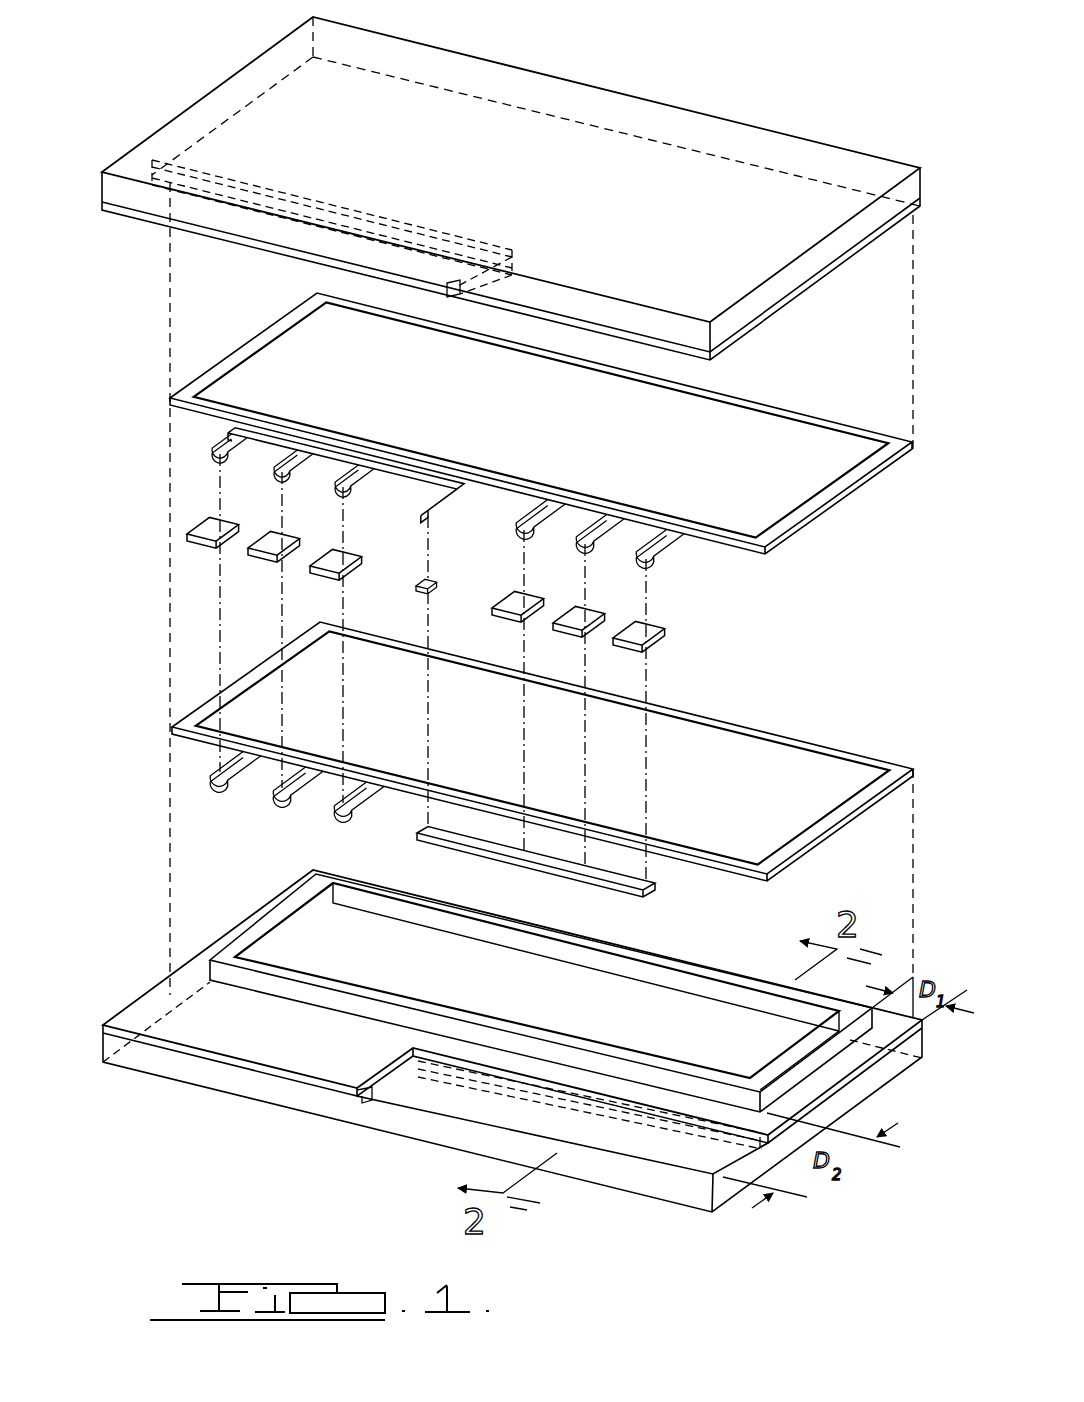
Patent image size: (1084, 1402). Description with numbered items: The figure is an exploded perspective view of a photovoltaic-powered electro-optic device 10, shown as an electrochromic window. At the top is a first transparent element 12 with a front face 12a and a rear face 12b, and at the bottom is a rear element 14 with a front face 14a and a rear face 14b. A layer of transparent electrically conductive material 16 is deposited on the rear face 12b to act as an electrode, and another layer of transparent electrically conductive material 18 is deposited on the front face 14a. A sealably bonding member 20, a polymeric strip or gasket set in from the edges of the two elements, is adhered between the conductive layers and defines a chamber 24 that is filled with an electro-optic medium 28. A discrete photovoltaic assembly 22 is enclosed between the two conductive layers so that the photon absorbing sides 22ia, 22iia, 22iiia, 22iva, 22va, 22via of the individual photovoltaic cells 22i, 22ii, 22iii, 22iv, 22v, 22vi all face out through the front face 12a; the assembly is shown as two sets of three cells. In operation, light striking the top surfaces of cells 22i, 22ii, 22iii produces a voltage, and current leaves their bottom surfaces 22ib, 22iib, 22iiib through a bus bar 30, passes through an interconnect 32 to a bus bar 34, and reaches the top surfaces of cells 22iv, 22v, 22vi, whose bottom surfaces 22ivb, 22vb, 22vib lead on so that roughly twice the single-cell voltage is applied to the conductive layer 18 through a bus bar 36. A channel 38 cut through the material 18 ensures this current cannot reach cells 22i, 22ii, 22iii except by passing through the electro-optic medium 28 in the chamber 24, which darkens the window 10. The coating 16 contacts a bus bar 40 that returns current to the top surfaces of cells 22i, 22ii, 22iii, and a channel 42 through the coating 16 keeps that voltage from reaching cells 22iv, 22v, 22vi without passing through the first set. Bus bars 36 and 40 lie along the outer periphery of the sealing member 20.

The photovoltaic-powered electro-optic device 10 is at (779, 70).
The first transparent element 12 is at (494, 188).
The front face 12a is at (215, 105).
The rear face 12b is at (135, 212).
The rear element 14 is at (494, 1041).
The front face 14a is at (115, 1028).
The rear face 14b is at (137, 1068).
The transparent electrically conductive material 16 is at (248, 247).
The transparent electrically conductive material 18 is at (228, 1062).
The sealably bonding member 20 is at (262, 930).
The photovoltaic assembly 22 is at (130, 481).
The photovoltaic cell 22i is at (705, 635).
The top surface 22ia is at (652, 625).
The bottom surface 22ib is at (648, 645).
The photovoltaic cell 22ii is at (596, 559).
The top surface 22iia is at (585, 618).
The bottom surface 22iib is at (592, 632).
The photovoltaic cell 22iii is at (506, 539).
The top surface 22iiia is at (506, 595).
The bottom surface 22iiib is at (528, 612).
The photovoltaic cell 22iv is at (372, 511).
The top surface 22iva is at (350, 556).
The bottom surface 22ivb is at (324, 580).
The photovoltaic cell 22v is at (303, 496).
The top surface 22va is at (288, 540).
The bottom surface 22vb is at (258, 565).
The photovoltaic cell 22vi is at (219, 484).
The top surface 22via is at (208, 530).
The bottom surface 22vib is at (200, 550).
The chamber 24 is at (477, 987).
The electro-optic medium 28 is at (635, 1005).
The bus bar 30 is at (416, 838).
The interconnect 32 is at (420, 592).
The bus bar 34 is at (220, 437).
The bus bar 36 is at (172, 722).
The channel 38 is at (360, 1100).
The bus bar 40 is at (888, 448).
The channel 42 is at (447, 292).